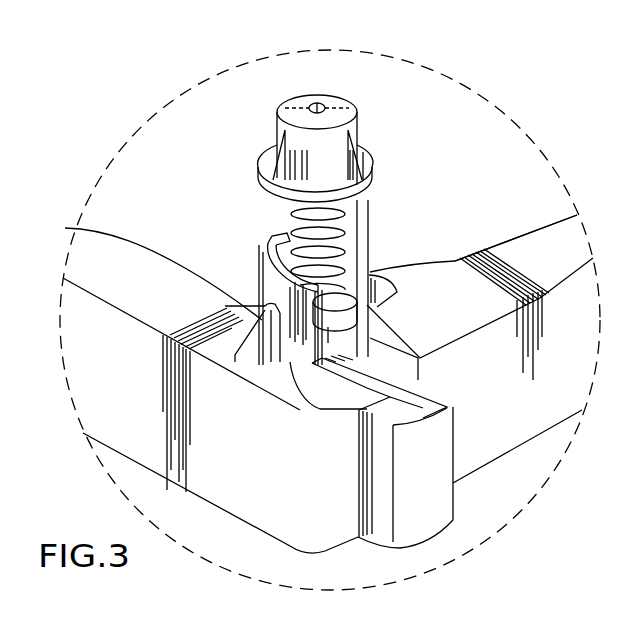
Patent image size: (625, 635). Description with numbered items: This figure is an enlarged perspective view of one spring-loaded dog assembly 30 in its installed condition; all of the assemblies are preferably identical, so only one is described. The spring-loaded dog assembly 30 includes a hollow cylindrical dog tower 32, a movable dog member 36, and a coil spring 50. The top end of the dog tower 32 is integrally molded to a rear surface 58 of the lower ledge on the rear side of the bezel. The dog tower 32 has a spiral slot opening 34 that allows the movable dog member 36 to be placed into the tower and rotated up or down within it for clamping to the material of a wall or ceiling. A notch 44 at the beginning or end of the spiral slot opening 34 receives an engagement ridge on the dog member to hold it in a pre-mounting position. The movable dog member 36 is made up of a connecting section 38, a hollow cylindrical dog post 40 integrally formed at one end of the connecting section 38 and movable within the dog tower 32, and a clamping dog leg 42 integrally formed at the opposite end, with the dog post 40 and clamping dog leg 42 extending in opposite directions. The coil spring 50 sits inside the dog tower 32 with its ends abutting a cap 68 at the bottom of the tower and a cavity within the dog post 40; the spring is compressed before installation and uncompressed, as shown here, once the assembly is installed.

The spring-loaded dog assembly 30 is at (414, 48).
The hollow cylindrical dog tower 32 is at (380, 156).
The spiral slot opening 34 is at (278, 271).
The movable dog member 36 is at (460, 412).
The connecting section 38 is at (428, 392).
The hollow cylindrical dog post 40 is at (348, 343).
The clamping dog leg 42 is at (380, 481).
The notch 44 is at (271, 238).
The coil spring 50 is at (350, 268).
The rear surface 58 is at (527, 264).
The cap 68 is at (276, 128).